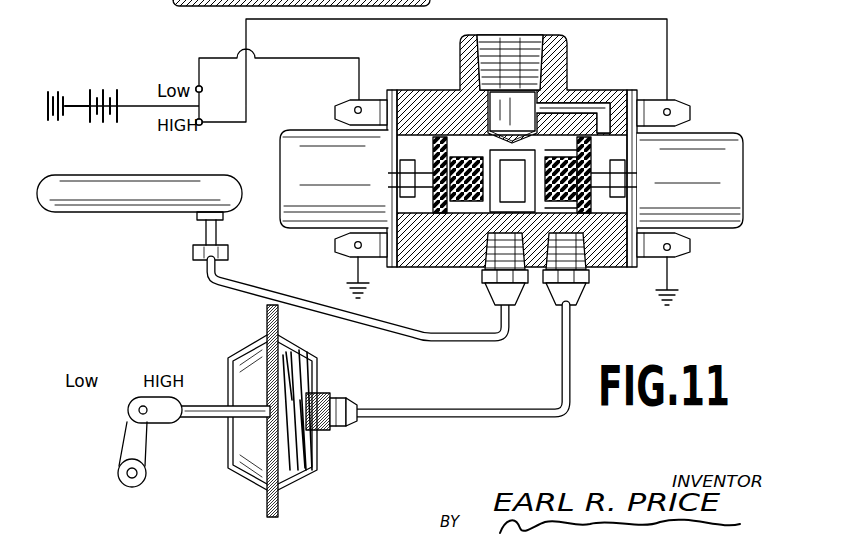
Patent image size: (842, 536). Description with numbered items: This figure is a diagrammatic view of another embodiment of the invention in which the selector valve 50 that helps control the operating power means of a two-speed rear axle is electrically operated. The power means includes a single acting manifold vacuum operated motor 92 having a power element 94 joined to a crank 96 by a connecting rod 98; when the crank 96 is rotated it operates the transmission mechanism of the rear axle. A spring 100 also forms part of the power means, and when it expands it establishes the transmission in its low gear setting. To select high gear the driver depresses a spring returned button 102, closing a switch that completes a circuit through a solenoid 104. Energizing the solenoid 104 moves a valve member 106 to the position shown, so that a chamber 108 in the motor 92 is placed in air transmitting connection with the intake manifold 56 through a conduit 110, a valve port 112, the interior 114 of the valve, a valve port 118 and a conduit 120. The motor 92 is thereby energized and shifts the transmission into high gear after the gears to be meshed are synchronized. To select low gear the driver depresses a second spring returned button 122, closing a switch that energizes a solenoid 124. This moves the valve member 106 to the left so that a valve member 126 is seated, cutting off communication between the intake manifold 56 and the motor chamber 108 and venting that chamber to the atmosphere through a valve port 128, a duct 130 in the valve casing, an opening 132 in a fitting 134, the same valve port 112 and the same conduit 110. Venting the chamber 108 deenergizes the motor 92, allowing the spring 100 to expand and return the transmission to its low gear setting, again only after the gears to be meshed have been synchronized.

The valve assembly 50 is at (570, 72).
The intake manifold 56 is at (82, 190).
The vacuum operated motor 92 is at (318, 388).
The power element 94 is at (298, 473).
The crank 96 is at (136, 453).
The connecting rod 98 is at (205, 406).
The spring 100 is at (312, 432).
The spring returned button 102 is at (200, 125).
The solenoid 104 is at (706, 152).
The valve member 106 is at (513, 175).
The chamber 108 is at (292, 360).
The conduit 110 is at (466, 412).
The valve port 112 is at (584, 255).
The interior of the valve 114 is at (437, 262).
The valve port 118 is at (489, 280).
The conduit 120 is at (447, 337).
The spring returned button 122 is at (199, 86).
The solenoid 124 is at (297, 215).
The valve member 126 is at (588, 110).
The valve port 128 is at (503, 55).
The duct 130 is at (577, 100).
The opening 132 is at (593, 160).
The fitting 134 is at (583, 208).